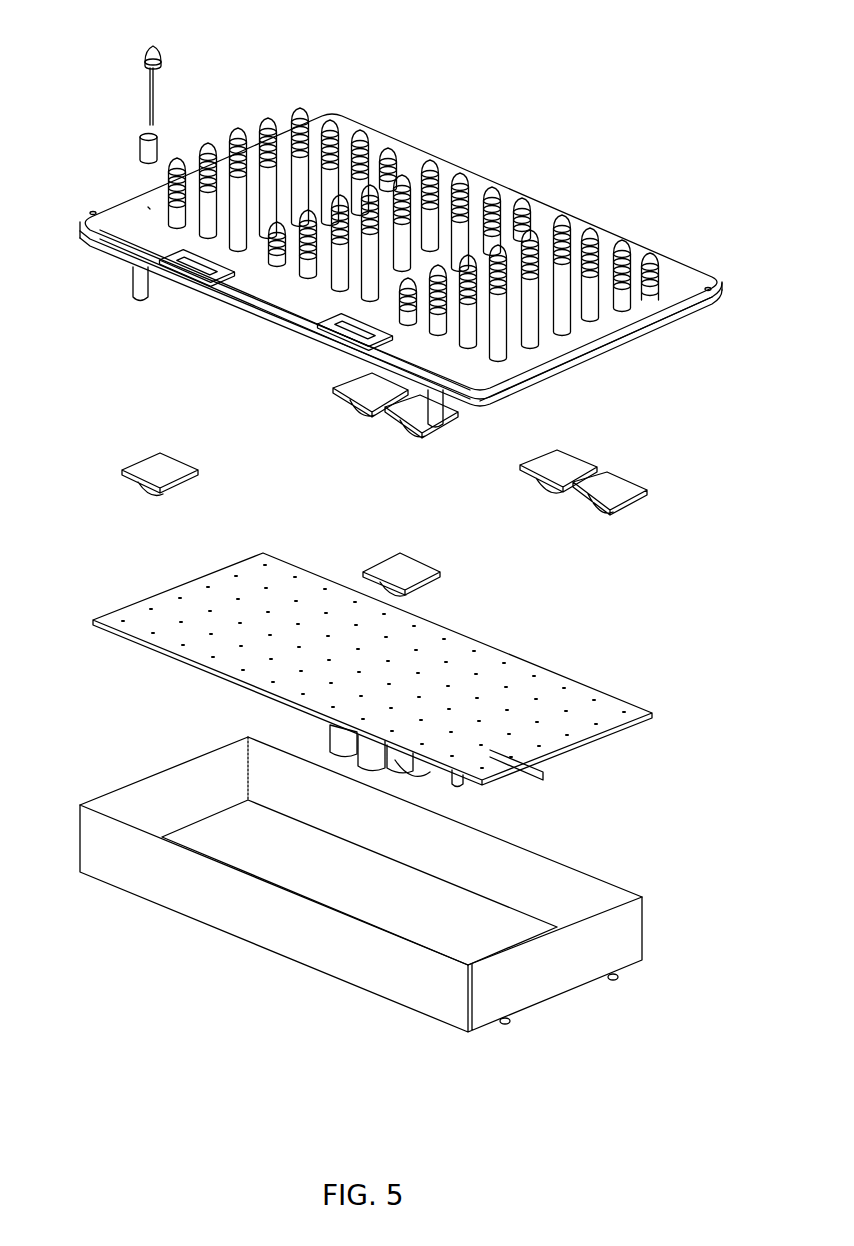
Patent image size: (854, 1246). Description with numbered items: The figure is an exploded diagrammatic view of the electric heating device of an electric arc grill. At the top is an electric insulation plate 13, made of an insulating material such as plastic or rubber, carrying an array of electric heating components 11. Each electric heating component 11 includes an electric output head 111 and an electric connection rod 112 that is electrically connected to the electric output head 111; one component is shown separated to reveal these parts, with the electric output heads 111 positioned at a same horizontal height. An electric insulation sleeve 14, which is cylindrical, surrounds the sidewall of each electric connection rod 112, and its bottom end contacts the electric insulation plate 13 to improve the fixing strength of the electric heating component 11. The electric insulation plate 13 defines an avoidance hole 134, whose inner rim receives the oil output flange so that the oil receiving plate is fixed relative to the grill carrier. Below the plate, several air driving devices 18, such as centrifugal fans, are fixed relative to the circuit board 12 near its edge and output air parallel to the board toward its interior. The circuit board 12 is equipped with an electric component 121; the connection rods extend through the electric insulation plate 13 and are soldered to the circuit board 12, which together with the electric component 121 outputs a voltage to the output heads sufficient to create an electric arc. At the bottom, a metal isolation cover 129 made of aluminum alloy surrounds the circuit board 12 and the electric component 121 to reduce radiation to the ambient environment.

The electric heating component 11 is at (306, 114).
The electric output head 111 is at (150, 50).
The electric connection rod 112 is at (147, 88).
The electric insulation sleeve 14 is at (146, 150).
The electric insulation plate 13 is at (667, 275).
The avoidance hole 134 is at (207, 268).
The air driving device 18 is at (150, 465).
The circuit board 12 is at (165, 603).
The electric component 121 is at (345, 738).
The metal isolation cover 129 is at (215, 907).